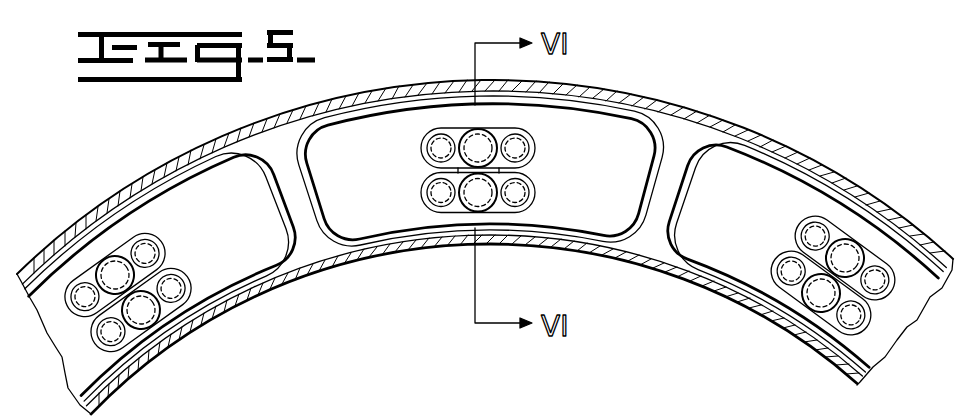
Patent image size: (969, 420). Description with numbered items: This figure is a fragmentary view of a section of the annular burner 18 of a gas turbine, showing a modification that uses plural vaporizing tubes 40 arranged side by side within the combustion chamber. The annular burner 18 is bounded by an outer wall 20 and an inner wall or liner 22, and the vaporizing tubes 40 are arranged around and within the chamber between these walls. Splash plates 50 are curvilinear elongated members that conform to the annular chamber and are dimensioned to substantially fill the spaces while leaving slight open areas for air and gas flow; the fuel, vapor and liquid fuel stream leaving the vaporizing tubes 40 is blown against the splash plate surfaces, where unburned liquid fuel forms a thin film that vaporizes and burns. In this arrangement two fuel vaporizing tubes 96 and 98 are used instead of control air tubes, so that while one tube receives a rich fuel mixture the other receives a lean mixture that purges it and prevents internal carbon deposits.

The annular burner 18 is at (485, 226).
The outer wall 20 is at (367, 92).
The inner wall 22 is at (387, 250).
The vaporizing tubes 40 is at (465, 165).
The splash plates 50 is at (205, 190).
The fuel vaporizing tube 96 is at (422, 152).
The fuel vaporizing tube 98 is at (422, 195).